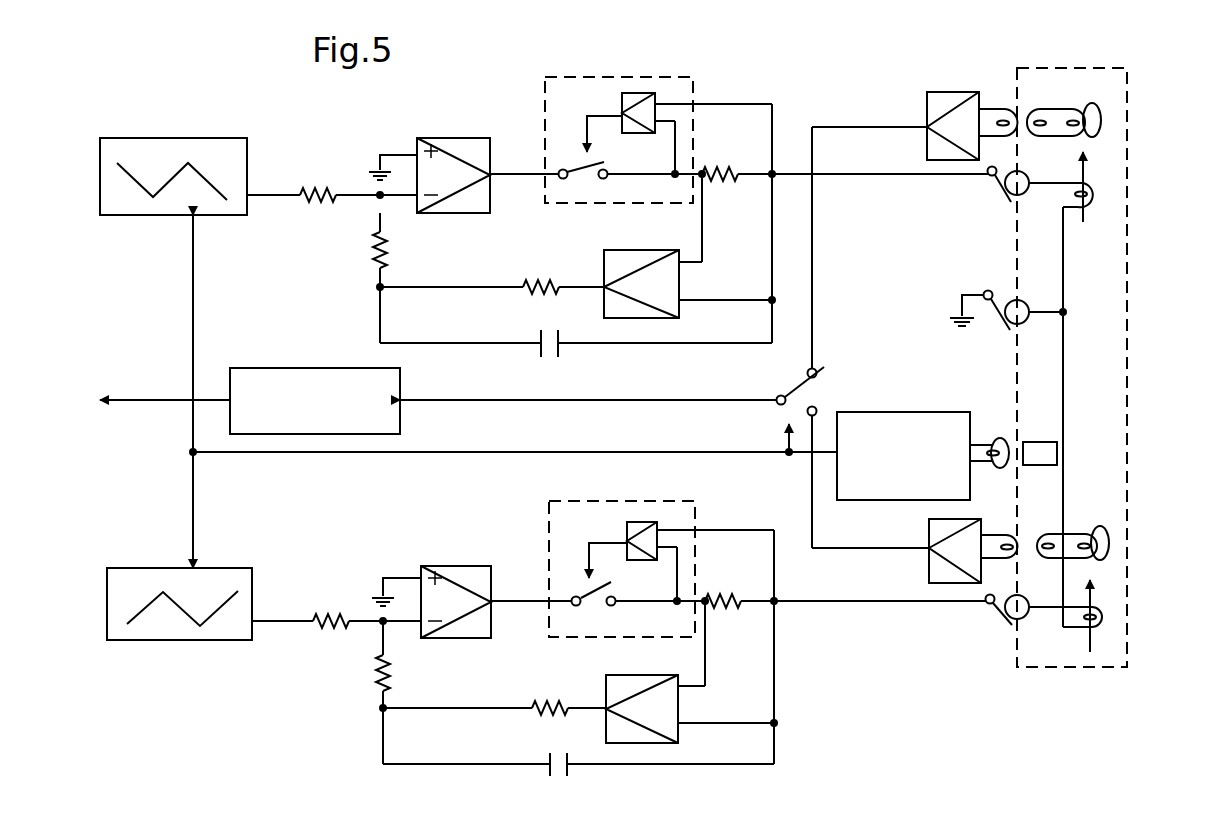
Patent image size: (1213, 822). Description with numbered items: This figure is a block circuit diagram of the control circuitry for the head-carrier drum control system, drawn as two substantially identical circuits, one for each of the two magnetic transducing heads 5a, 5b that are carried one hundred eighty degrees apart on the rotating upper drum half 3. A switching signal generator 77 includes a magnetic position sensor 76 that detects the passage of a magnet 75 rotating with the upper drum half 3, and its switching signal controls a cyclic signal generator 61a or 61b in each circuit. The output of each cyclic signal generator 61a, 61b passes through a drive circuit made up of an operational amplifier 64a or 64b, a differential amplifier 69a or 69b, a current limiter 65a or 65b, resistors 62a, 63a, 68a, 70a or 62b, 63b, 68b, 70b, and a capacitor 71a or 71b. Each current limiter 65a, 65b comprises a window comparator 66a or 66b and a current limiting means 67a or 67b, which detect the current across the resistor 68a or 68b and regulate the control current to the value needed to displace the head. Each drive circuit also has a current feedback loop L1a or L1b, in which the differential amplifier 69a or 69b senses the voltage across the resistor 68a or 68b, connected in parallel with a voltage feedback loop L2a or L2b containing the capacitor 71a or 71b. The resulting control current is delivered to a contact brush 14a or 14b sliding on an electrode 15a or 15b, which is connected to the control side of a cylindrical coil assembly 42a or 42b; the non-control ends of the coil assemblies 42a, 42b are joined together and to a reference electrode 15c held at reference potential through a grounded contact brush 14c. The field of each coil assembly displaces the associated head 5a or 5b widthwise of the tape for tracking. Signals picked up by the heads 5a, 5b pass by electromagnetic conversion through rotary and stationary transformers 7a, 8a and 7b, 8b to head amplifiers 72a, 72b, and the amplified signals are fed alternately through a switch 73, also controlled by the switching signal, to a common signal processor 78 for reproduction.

The upper drum half 3 is at (1131, 102).
The magnetic transducing head 5a is at (1098, 105).
The magnetic transducing head 5b is at (1109, 530).
The rotary transformer 7a is at (1071, 107).
The rotary transformer 7b is at (1080, 534).
The stationary transformer 8a is at (1004, 107).
The stationary transformer 8b is at (1004, 560).
The contact brush 14a is at (996, 181).
The contact brush 14b is at (995, 610).
The grounded contact brush 14c is at (990, 312).
The electrode 15a is at (1028, 175).
The electrode 15b is at (1030, 620).
The reference electrode 15c is at (1028, 301).
The cylindrical coil assembly 42a is at (1089, 196).
The cylindrical coil assembly 42b is at (1103, 616).
The cyclic signal generator 61a is at (203, 136).
The cyclic signal generator 61b is at (218, 570).
The resistor 62a is at (336, 188).
The resistor 62b is at (328, 629).
The resistor 63a is at (403, 249).
The resistor 63b is at (404, 680).
The operational amplifier 64a is at (466, 138).
The operational amplifier 64b is at (447, 568).
The current limiter 65a is at (697, 80).
The current limiter 65b is at (697, 514).
The window comparator 66a is at (644, 94).
The window comparator 66b is at (648, 522).
The current limiting means 67a is at (566, 156).
The current limiting means 67b is at (570, 586).
The resistor 68a is at (729, 160).
The resistor 68b is at (738, 586).
The differential amplifier 69a is at (644, 250).
The differential amplifier 69b is at (652, 678).
The resistor 70a is at (555, 270).
The resistor 70b is at (564, 700).
The capacitor 71a is at (535, 357).
The capacitor 71b is at (550, 756).
The head amplifier 72a is at (956, 92).
The head amplifier 72b is at (966, 518).
The switch 73 is at (796, 388).
The magnet 75 is at (1038, 438).
The magnetic position sensor 76 is at (991, 436).
The switching signal generator 77 is at (882, 412).
The signal processor 78 is at (310, 368).
The current feedback loop L1a is at (464, 289).
The current feedback loop L1b is at (466, 690).
The voltage feedback loop L2a is at (472, 344).
The voltage feedback loop L2b is at (439, 764).